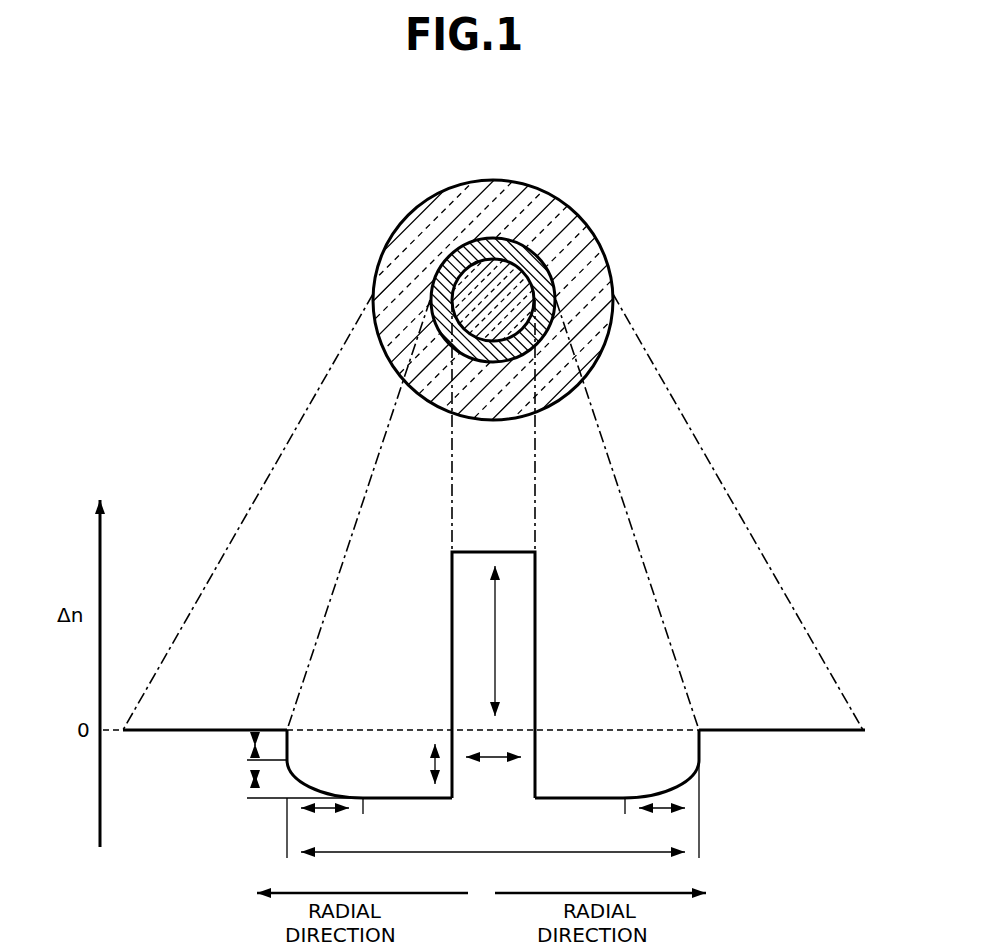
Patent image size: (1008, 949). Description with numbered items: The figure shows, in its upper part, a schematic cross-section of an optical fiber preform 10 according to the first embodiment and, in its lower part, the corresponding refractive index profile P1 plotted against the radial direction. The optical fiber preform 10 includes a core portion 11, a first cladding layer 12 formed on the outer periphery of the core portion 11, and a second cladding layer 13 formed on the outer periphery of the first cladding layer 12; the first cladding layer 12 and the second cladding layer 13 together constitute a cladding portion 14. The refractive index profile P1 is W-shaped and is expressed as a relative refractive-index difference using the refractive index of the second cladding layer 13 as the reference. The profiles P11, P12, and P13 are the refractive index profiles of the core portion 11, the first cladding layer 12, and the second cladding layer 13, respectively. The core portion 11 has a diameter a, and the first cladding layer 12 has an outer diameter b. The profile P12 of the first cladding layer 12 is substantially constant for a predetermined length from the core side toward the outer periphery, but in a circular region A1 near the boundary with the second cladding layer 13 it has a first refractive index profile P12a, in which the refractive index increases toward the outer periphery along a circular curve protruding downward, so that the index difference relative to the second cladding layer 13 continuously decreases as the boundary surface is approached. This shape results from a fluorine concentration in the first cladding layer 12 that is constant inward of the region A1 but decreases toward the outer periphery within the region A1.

The optical fiber preform 10 is at (507, 285).
The core portion 11 is at (522, 278).
The first cladding layer 12 is at (509, 242).
The second cladding layer 13 is at (476, 193).
The cladding portion 14 is at (493, 285).
The refractive index profile P1 is at (494, 627).
The refractive index profile of the core portion P11 is at (495, 551).
The refractive index profile of the first cladding layer P12 is at (367, 784).
The first refractive index profile P12a is at (308, 780).
The refractive index profile of the second cladding layer P13 is at (200, 729).
The core diameter a is at (493, 772).
The outer diameter of the first cladding layer b is at (493, 866).
The circular region A1 is at (493, 809).